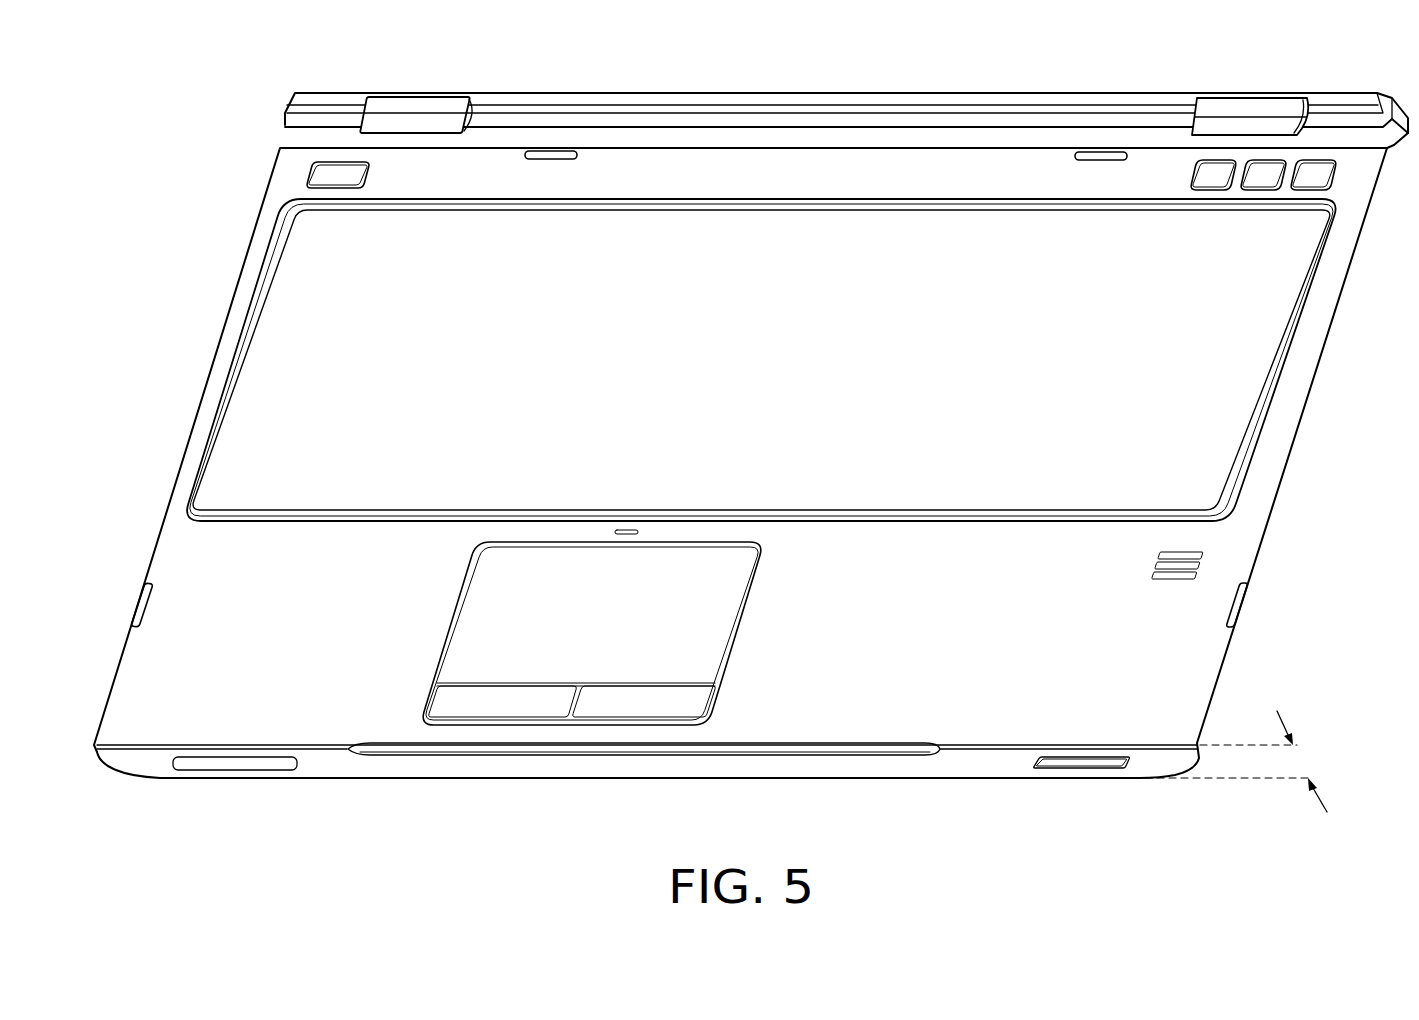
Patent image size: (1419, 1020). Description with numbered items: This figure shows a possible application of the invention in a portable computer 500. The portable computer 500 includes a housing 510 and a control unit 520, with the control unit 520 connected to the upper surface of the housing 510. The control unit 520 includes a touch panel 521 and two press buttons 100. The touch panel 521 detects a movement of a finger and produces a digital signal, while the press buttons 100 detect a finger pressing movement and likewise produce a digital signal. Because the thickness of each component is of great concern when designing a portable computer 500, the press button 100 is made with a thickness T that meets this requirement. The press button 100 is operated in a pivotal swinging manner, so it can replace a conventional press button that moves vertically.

The portable computer 500 is at (183, 134).
The housing 510 is at (1227, 551).
The control unit 520 is at (740, 651).
The touch panel 521 is at (508, 657).
The press button 100 is at (648, 698).
The thickness T is at (1238, 761).